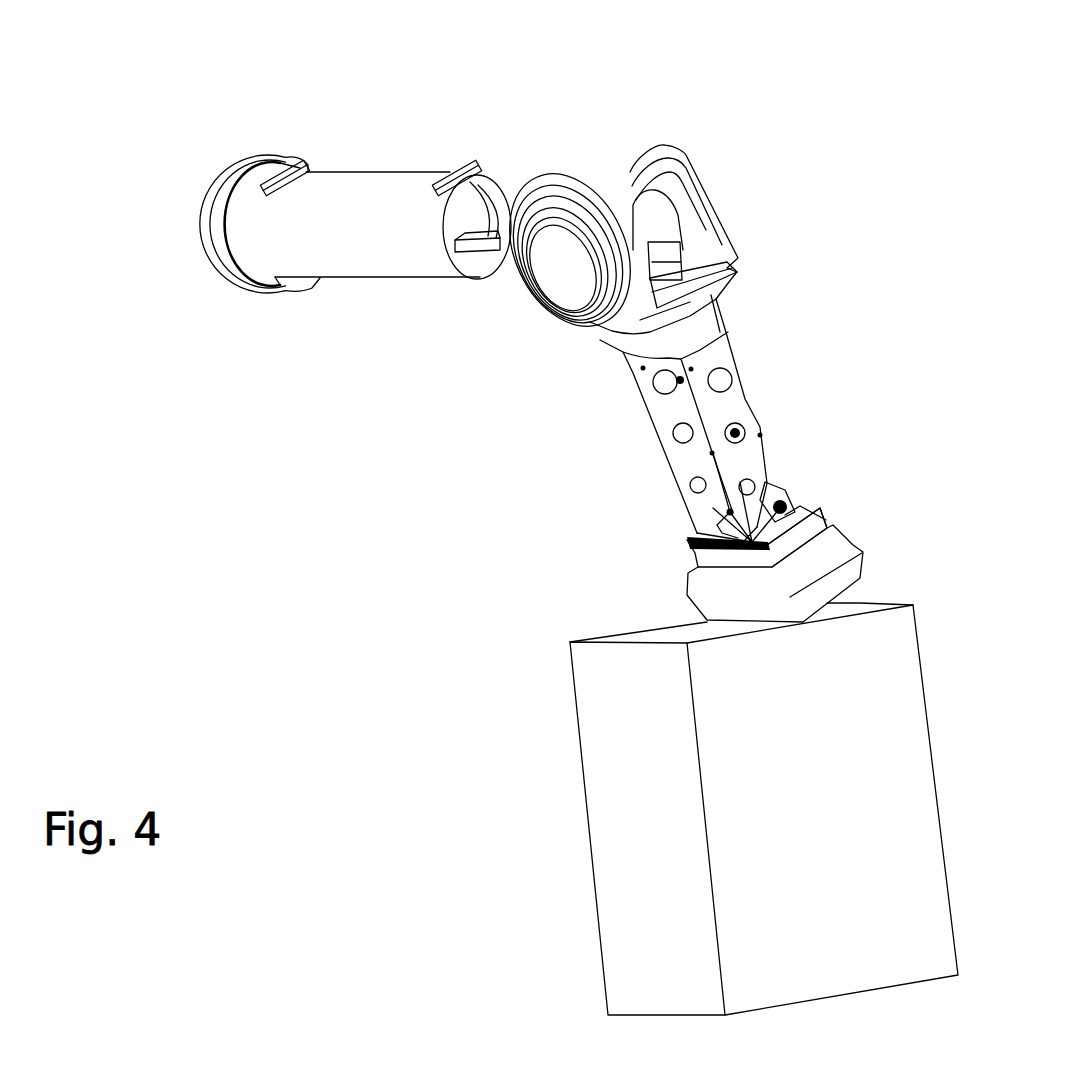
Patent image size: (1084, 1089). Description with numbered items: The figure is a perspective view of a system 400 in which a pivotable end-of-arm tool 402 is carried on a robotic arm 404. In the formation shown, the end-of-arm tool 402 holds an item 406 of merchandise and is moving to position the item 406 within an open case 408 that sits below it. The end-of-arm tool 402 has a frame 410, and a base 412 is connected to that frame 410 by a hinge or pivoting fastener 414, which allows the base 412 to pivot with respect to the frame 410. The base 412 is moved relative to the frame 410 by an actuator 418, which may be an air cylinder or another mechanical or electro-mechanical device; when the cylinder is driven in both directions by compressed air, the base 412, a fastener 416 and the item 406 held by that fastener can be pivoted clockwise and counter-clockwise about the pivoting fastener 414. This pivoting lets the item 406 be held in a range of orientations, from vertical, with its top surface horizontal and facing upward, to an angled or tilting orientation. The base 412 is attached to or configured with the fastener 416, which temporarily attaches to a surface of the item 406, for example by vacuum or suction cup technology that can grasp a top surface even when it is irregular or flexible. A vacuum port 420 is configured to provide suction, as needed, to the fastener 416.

The system 400 is at (766, 58).
The pivotable end-of-arm tool 402 is at (805, 329).
The robotic arm 404 is at (374, 172).
The item 406 is at (842, 535).
The open case 408 is at (591, 838).
The frame 410 is at (665, 452).
The base 412 is at (798, 507).
The pivoting fastener 414 is at (750, 542).
The fastener 416 is at (693, 558).
The actuator 418 is at (774, 492).
The vacuum port 420 is at (730, 511).